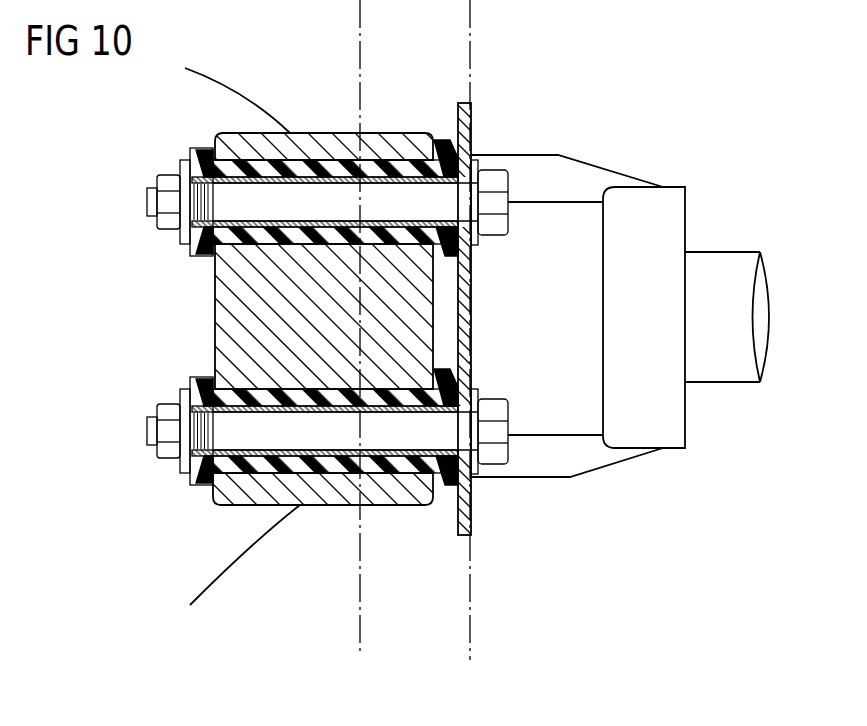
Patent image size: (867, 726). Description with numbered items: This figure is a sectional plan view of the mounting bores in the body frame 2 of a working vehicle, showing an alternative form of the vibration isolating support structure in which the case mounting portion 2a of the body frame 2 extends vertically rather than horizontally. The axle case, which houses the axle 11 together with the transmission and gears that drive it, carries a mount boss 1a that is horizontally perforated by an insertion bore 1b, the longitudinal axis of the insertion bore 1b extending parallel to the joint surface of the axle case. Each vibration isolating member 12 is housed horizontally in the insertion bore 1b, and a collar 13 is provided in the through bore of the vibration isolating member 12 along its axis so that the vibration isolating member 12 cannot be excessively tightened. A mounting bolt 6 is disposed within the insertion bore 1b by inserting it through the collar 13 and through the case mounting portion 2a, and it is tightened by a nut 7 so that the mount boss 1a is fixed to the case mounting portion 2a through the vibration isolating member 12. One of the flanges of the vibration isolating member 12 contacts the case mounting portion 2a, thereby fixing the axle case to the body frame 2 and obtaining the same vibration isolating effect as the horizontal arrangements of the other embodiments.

The insertion bore 1b is at (235, 131).
The mount boss 1a is at (338, 128).
The body frame 2 is at (473, 42).
The case mounting portion 2a is at (471, 118).
The vibration isolating member 12 is at (453, 130).
The collar 13 is at (298, 185).
The nut 7 is at (163, 238).
The mounting bolt 6 is at (497, 393).
The axle 11 is at (718, 277).